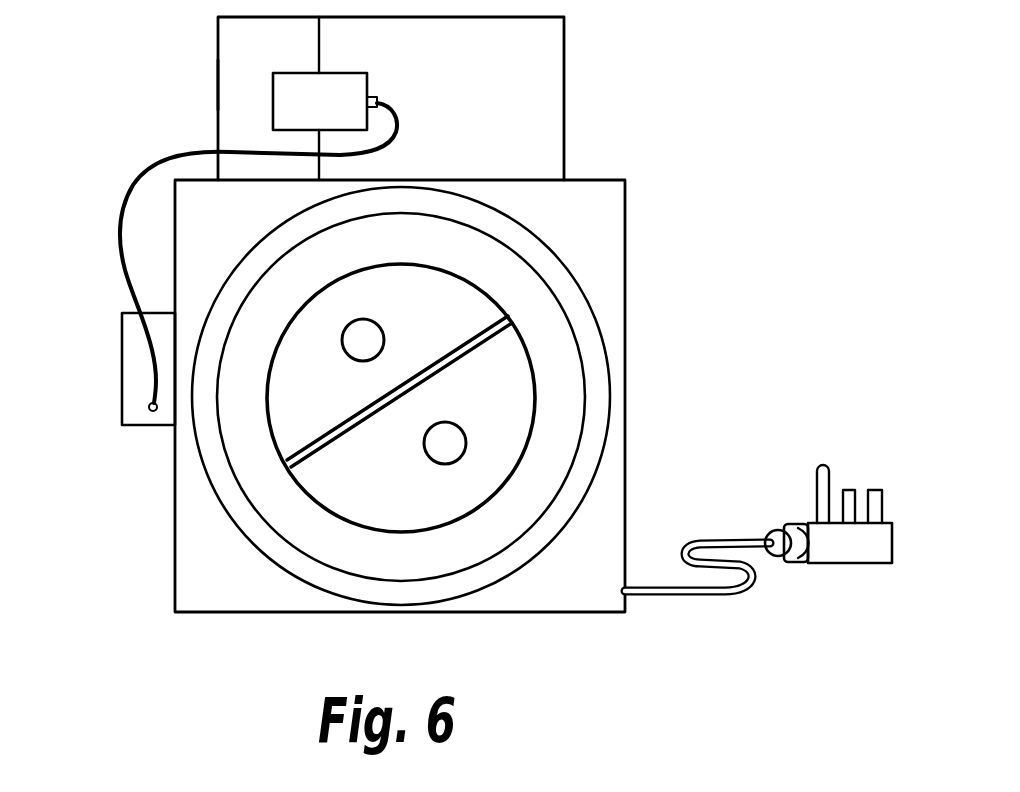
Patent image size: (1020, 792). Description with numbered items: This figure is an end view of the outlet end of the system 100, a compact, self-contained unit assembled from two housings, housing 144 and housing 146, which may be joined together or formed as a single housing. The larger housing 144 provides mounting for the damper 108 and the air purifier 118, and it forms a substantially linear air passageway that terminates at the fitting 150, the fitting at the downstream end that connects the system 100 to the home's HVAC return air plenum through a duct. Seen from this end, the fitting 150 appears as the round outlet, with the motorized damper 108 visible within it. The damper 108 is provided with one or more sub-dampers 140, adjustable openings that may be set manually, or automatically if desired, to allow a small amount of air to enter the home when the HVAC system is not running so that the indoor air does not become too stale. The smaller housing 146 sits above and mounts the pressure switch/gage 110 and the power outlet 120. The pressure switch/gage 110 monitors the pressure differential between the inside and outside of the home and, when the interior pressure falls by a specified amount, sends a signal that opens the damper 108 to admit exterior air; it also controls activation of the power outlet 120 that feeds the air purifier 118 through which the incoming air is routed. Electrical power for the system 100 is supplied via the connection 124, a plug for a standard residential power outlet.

The system 100 is at (697, 108).
The damper 108 is at (338, 490).
The pressure switch/gage 110 is at (218, 83).
The air purifier 118 is at (122, 363).
The power outlet 120 is at (338, 80).
The connection 124 is at (850, 486).
The sub-dampers 140 is at (442, 425).
The housing 144 is at (626, 270).
The housing 146 is at (565, 100).
The fitting 150 is at (518, 572).